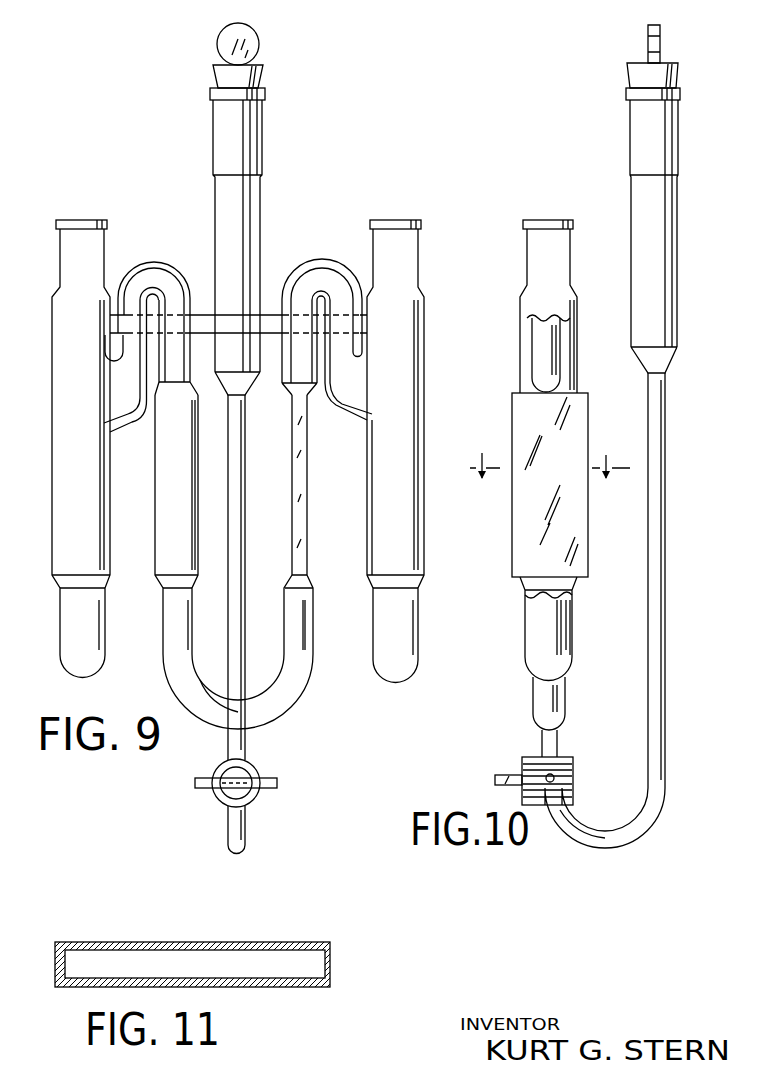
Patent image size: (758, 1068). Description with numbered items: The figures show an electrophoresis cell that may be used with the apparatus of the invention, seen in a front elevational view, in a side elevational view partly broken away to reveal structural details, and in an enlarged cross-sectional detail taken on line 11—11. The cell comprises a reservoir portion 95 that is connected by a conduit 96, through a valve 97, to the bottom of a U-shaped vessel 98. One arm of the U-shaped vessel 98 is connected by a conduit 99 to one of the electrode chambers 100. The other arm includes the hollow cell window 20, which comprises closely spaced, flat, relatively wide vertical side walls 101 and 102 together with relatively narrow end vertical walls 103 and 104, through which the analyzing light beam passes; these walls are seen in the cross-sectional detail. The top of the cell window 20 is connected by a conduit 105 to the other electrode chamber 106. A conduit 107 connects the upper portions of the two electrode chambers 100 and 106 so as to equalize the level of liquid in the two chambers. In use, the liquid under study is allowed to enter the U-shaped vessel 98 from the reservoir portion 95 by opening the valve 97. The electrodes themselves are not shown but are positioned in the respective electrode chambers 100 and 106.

In FIG. 10, the section line 11— 11 is at (550, 456).
In FIG. 9, the hollow cell window 20 is at (332, 472).
In FIG. 10, the hollow cell window 20 is at (511, 531).
In FIG. 11, the hollow cell window 20 is at (169, 939).
In FIG. 9, the reservoir portion 95 is at (260, 207).
In FIG. 10, the reservoir portion 95 is at (668, 316).
In FIG. 9, the conduit 96 is at (240, 510).
In FIG. 10, the conduit 96 is at (655, 712).
In FIG. 9, the valve 97 is at (258, 771).
In FIG. 10, the valve 97 is at (575, 757).
In FIG. 9, the U-shaped vessel 98 is at (284, 706).
In FIG. 10, the U-shaped vessel 98 is at (540, 698).
In FIG. 9, the conduit 99 is at (166, 264).
In FIG. 9, the electrode chamber 100 is at (67, 402).
In FIG. 10, the vertical side wall 101 is at (575, 525).
In FIG. 11, the vertical side wall 101 is at (268, 987).
In FIG. 11, the vertical side wall 102 is at (275, 942).
In FIG. 11, the end vertical wall 103 is at (330, 962).
In FIG. 9, the end vertical wall 104 is at (300, 535).
In FIG. 11, the end vertical wall 104 is at (62, 965).
In FIG. 9, the conduit 105 is at (316, 263).
In FIG. 10, the conduit 105 is at (548, 343).
In FIG. 9, the electrode chamber 106 is at (410, 386).
In FIG. 10, the electrode chamber 106 is at (565, 302).
In FIG. 9, the conduit 107 is at (266, 312).